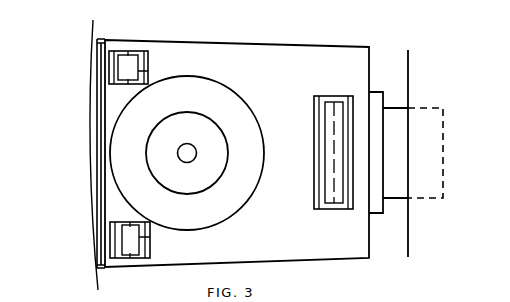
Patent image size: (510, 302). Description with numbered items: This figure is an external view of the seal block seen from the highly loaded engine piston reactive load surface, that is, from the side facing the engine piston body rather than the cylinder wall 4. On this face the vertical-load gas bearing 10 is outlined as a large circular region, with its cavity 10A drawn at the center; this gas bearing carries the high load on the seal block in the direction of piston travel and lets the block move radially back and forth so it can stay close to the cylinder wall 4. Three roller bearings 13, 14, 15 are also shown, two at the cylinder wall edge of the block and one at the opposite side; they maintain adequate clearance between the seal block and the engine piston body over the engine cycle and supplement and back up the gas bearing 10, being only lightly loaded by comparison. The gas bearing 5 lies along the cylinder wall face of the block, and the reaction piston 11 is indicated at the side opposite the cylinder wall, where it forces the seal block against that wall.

The engine cylinder wall 4 is at (91, 63).
The gas bearing 5 is at (95, 228).
The gas bearing 10 is at (238, 97).
The cavity 10A is at (215, 148).
The reaction piston 11 is at (396, 107).
The roller bearing 13 is at (148, 71).
The roller bearing 14 is at (150, 237).
The roller bearing 15 is at (327, 185).